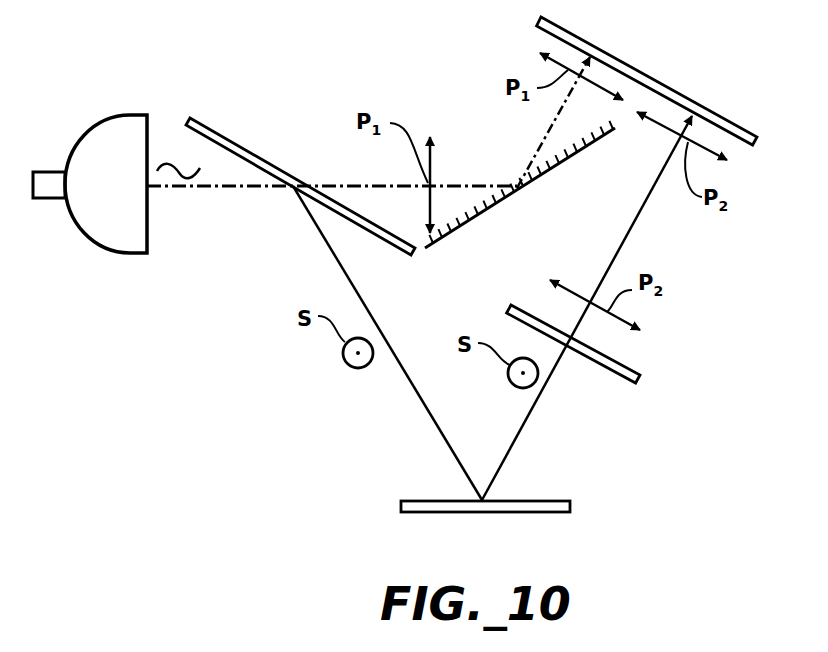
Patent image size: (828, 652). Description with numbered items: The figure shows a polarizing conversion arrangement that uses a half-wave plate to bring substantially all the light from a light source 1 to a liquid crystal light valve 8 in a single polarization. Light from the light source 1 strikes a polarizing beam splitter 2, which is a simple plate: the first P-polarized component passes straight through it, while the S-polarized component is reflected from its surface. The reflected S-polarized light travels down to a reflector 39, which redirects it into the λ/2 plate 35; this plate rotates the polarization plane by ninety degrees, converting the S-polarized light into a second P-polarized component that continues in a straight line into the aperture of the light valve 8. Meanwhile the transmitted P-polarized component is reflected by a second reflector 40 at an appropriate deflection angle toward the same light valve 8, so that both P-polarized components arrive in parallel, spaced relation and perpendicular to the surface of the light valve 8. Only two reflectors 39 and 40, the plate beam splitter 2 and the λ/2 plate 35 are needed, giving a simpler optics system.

The light source 1 is at (117, 132).
The polarizing beam splitter 2 is at (227, 145).
The liquid crystal light valve 8 is at (630, 66).
The λ/2 plate 35 is at (630, 372).
The reflector 39 is at (572, 503).
The reflector 40 is at (515, 188).